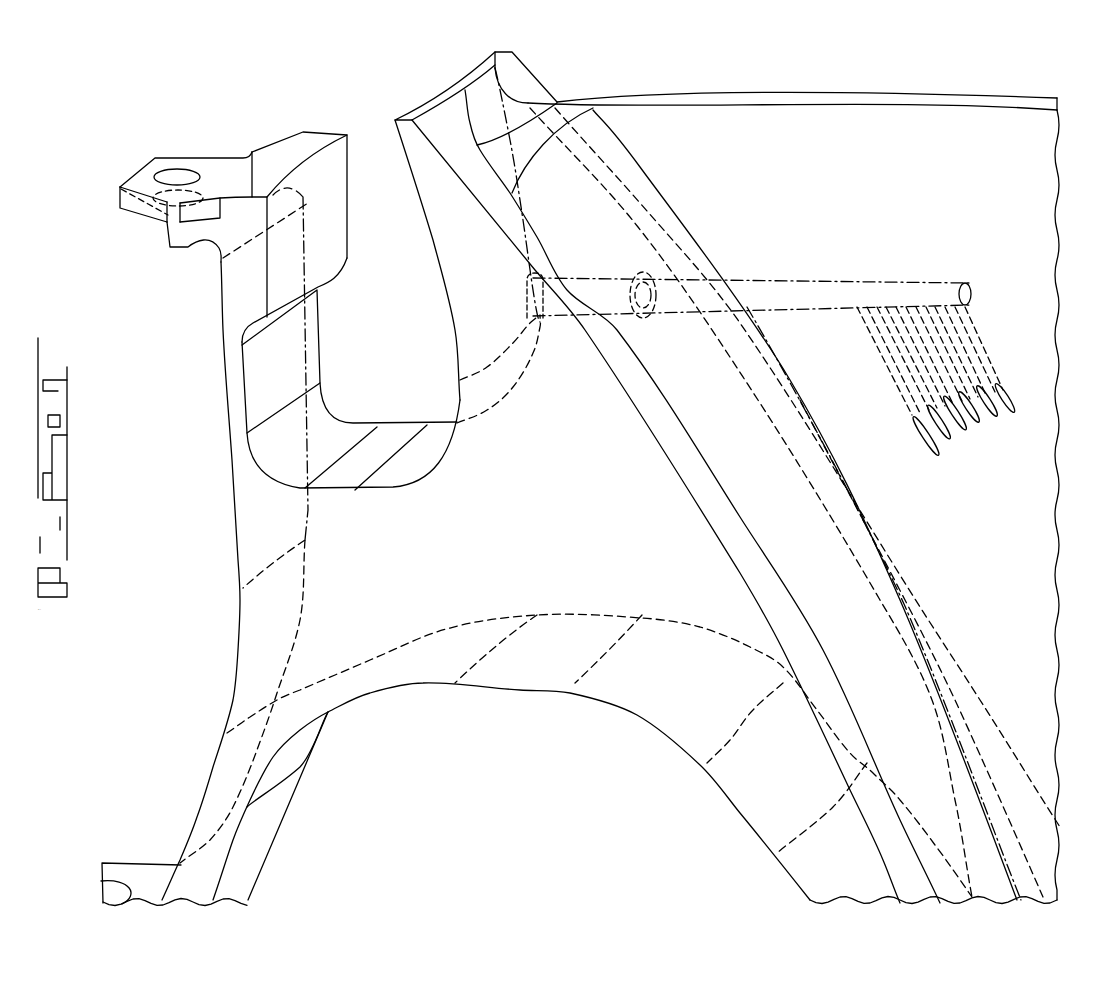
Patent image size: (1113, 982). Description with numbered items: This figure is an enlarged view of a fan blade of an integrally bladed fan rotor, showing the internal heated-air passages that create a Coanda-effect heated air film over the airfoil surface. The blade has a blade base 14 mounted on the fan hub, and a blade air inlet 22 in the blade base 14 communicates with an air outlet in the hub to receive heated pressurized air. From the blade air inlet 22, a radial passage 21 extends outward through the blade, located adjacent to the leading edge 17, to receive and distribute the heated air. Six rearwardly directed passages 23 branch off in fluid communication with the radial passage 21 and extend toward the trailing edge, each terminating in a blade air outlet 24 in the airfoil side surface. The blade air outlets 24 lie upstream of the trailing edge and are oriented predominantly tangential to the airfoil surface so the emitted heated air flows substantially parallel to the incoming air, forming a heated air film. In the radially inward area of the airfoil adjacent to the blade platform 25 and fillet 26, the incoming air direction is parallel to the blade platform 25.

The blade base 14 is at (522, 690).
The leading edge 17 is at (883, 97).
The radial passage 21 is at (805, 283).
The blade air inlet 22 is at (527, 300).
The rearwardly directed passages 23 is at (983, 355).
The blade air outlets 24 is at (1017, 405).
The blade platform 25 is at (782, 652).
The fillet 26 is at (840, 600).